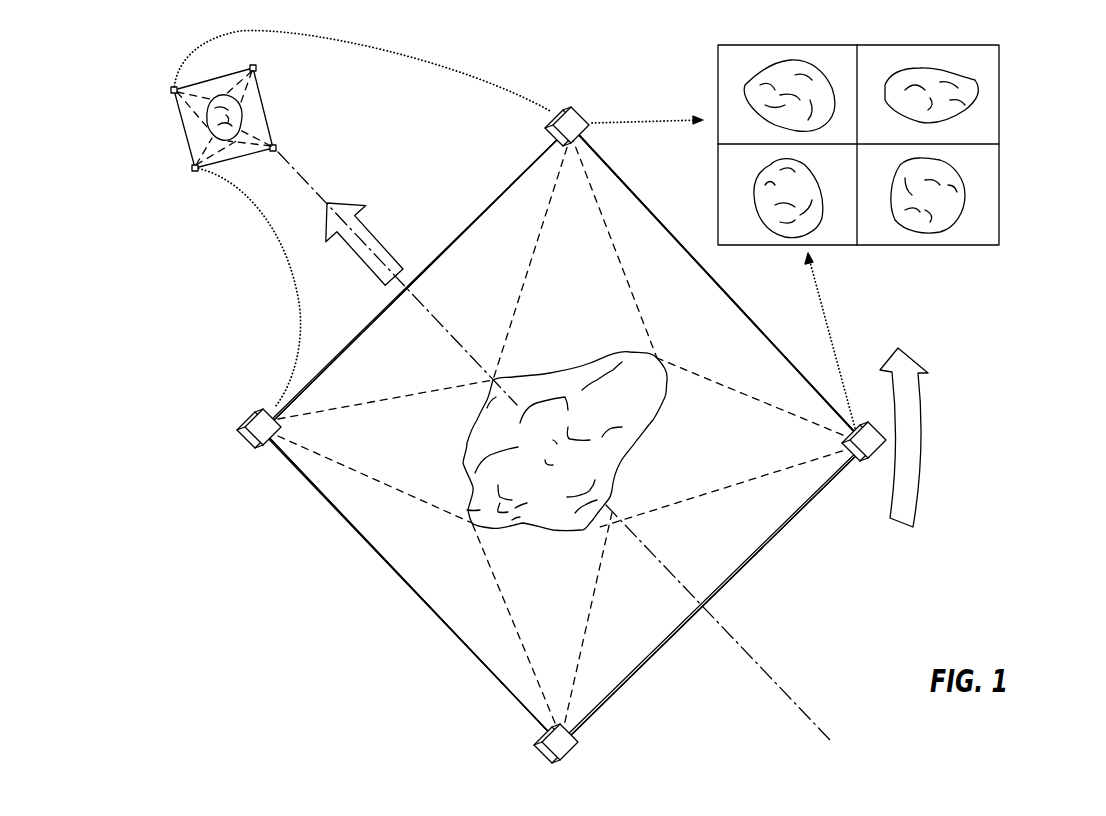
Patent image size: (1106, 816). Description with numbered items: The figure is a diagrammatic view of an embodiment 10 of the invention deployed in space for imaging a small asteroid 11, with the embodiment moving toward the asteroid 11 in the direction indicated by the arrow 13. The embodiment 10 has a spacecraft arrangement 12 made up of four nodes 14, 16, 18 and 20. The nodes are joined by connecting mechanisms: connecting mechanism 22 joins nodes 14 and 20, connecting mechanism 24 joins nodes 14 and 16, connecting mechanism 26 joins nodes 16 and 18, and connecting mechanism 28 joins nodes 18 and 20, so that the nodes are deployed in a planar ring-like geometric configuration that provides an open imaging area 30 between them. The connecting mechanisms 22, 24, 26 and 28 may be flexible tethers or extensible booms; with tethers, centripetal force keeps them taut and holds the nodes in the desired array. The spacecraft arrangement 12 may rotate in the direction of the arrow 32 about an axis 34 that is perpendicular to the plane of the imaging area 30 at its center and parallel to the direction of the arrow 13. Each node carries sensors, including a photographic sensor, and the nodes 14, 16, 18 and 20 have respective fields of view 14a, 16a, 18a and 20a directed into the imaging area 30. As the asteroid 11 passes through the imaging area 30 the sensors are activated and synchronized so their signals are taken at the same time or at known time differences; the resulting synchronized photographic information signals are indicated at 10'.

The embodiment 10 is at (534, 435).
The synchronized photographic information signals 10' is at (904, 145).
The small asteroid 11 is at (553, 373).
The spacecraft arrangement 12 is at (727, 580).
The arrow 13 is at (377, 232).
The node 14 is at (577, 742).
The field of view 14a is at (572, 597).
The node 16 is at (253, 408).
The field of view 16a is at (403, 407).
The node 18 is at (580, 112).
The field of view 18a is at (558, 260).
The node 20 is at (863, 460).
The field of view 20a is at (713, 463).
The connecting mechanism 22 is at (662, 643).
The connecting mechanism 24 is at (430, 613).
The connecting mechanism 26 is at (358, 330).
The connecting mechanism 28 is at (635, 192).
The open imaging area 30 is at (427, 571).
The arrow 32 is at (925, 437).
The axis 34 is at (792, 693).